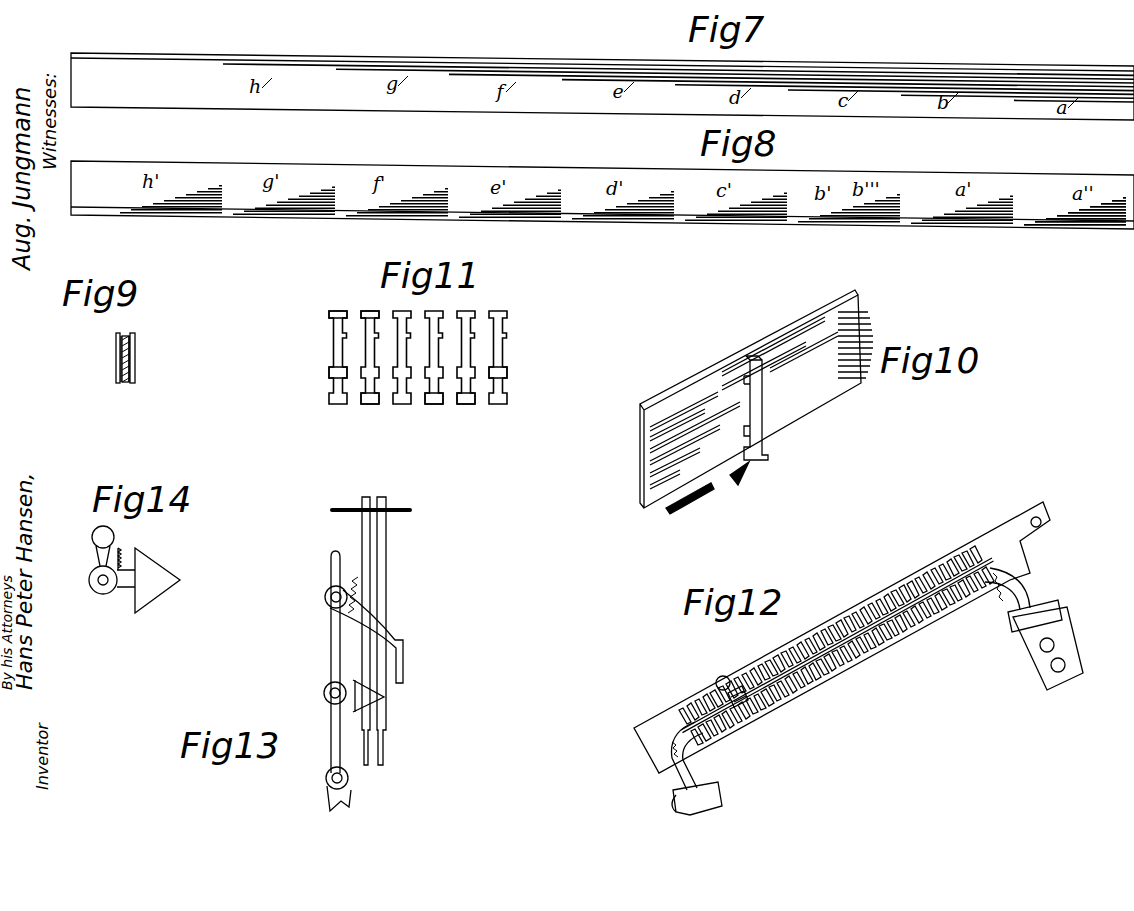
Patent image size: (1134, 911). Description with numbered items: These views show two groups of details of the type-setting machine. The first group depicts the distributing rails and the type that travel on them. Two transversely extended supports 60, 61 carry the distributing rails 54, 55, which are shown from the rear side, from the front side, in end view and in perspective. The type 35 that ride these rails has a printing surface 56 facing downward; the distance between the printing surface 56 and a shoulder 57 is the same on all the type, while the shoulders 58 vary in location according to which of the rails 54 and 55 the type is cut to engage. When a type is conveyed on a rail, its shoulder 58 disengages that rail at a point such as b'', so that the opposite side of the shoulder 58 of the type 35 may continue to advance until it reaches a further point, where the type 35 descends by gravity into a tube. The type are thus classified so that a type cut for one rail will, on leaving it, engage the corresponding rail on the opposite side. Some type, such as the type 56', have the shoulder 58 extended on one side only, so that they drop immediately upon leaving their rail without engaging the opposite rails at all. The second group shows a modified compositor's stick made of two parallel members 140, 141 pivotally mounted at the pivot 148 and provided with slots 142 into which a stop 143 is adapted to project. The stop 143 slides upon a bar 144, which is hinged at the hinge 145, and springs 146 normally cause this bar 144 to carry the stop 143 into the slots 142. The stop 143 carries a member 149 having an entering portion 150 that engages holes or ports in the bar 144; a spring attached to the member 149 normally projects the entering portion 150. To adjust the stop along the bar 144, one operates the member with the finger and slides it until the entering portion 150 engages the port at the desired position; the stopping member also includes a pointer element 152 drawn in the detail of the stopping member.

In FIG. 7, the distributing rail 54 is at (490, 72).
In FIG. 9, the distributing rail 54 is at (117, 366).
In FIG. 8, the distributing rail 55 is at (440, 176).
In FIG. 9, the distributing rail 55 is at (134, 350).
In FIG. 10, the distributing rail 55 is at (690, 424).
In FIG. 8, the transversely extended support 60 is at (594, 178).
In FIG. 9, the transversely extended support 60 is at (135, 368).
In FIG. 10, the transversely extended support 60 is at (800, 403).
In FIG. 8, the transversely extended support 61 is at (623, 175).
In FIG. 9, the transversely extended support 61 is at (116, 356).
In FIG. 9, the type 35 is at (124, 384).
In FIG. 11, the type 35 is at (369, 350).
In FIG. 10, the type 35 is at (763, 418).
In FIG. 11, the shoulder 58 is at (360, 316).
In FIG. 11, the shoulder 57 is at (342, 376).
In FIG. 11, the printing surface 56 is at (402, 415).
In FIG. 11, the type 56' is at (467, 413).
In FIG. 7, the disengagement point b'' is at (907, 121).
In FIG. 13, the parallel member 140 is at (386, 536).
In FIG. 12, the parallel member 140 is at (985, 545).
In FIG. 13, the parallel member 141 is at (362, 530).
In FIG. 12, the slot 142 is at (895, 594).
In FIG. 14, the stop 143 is at (146, 580).
In FIG. 13, the stop 143 is at (324, 695).
In FIG. 12, the stop 143 is at (752, 676).
In FIG. 13, the bar 144 is at (332, 654).
In FIG. 12, the bar 144 is at (1010, 572).
In FIG. 13, the hinge 145 is at (330, 605).
In FIG. 12, the hinge 145 is at (1060, 615).
In FIG. 13, the spring 146 is at (352, 598).
In FIG. 12, the spring 146 is at (1015, 590).
In FIG. 13, the pivot 148 is at (392, 510).
In FIG. 12, the pivot 148 is at (1043, 520).
In FIG. 14, the member 149 is at (100, 543).
In FIG. 14, the entering portion 150 is at (98, 584).
In FIG. 12, the entering portion 150 is at (812, 636).
In FIG. 14, the pointer 152 is at (181, 581).
In FIG. 13, the pointer 152 is at (382, 697).